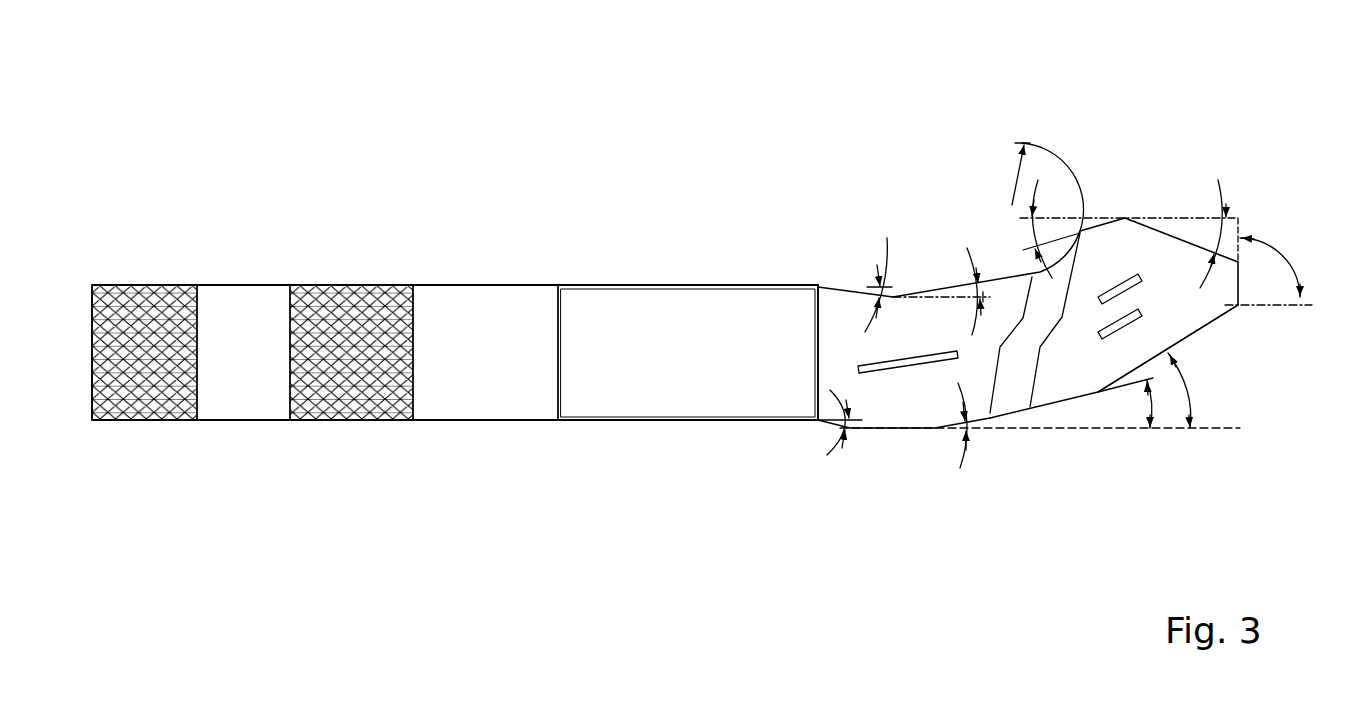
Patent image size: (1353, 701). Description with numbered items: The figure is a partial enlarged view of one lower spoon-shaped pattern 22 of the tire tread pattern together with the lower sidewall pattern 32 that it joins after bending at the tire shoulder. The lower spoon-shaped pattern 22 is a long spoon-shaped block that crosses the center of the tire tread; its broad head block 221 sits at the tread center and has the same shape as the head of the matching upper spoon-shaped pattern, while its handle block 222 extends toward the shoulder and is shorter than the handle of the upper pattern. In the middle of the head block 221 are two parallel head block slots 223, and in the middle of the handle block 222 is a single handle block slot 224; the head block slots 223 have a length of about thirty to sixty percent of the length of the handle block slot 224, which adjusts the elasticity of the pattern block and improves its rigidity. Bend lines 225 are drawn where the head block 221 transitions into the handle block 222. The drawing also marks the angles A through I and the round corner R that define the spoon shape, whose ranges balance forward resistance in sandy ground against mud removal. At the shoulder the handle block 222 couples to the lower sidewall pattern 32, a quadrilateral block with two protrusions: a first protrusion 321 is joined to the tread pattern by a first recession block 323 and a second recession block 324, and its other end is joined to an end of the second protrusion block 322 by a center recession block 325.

The lower sidewall pattern 32 is at (287, 178).
The lower spoon-shaped pattern 22 is at (898, 168).
The first protrusion 321 is at (363, 300).
The second protrusion block 322 is at (147, 300).
The first recession block 323 is at (648, 305).
The second recession block 324 is at (495, 303).
The center recession block 325 is at (248, 305).
The head block 221 is at (1188, 312).
The handle block 222 is at (890, 408).
The head block slots 223 is at (1127, 288).
The handle block slot 224 is at (923, 365).
The bend lines 225 is at (1010, 403).